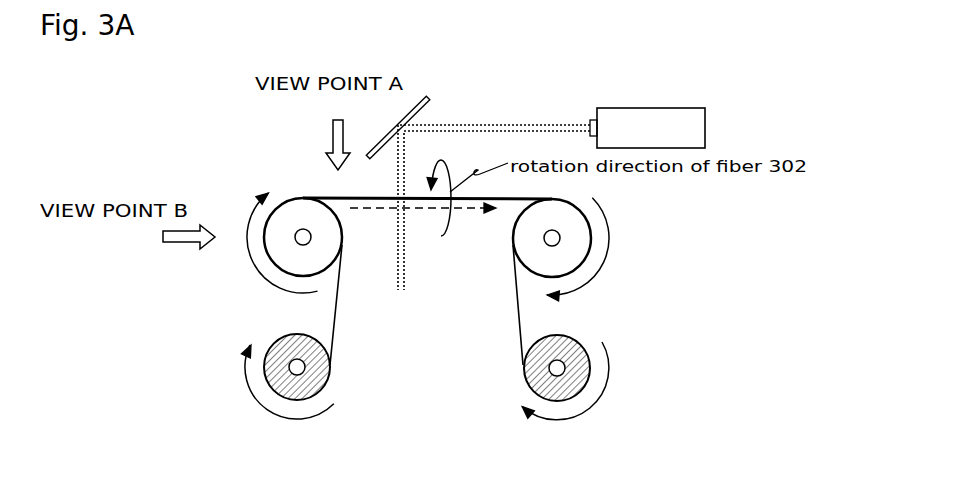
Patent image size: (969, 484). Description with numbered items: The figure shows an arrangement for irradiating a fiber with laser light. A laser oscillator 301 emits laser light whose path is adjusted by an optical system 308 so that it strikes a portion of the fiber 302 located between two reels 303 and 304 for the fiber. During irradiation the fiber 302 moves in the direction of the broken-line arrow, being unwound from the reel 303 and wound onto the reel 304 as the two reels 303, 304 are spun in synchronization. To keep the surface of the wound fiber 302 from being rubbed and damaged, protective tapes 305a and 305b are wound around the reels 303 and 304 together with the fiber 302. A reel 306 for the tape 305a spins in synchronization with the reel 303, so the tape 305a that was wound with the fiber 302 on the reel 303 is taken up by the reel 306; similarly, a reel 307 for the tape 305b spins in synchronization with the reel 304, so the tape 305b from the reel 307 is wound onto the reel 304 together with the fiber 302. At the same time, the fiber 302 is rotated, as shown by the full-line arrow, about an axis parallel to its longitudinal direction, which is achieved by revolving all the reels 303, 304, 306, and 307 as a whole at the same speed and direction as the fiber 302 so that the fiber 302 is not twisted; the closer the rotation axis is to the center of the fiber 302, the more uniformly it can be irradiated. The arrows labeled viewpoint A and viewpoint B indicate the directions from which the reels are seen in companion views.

The laser oscillator 301 is at (700, 132).
The fiber 302 is at (337, 197).
The reel 303 is at (280, 253).
The reel 304 is at (565, 253).
The tape 305a is at (338, 308).
The tape 305b is at (515, 310).
The reel 306 is at (272, 388).
The reel 307 is at (568, 388).
The optical system 308 is at (428, 98).